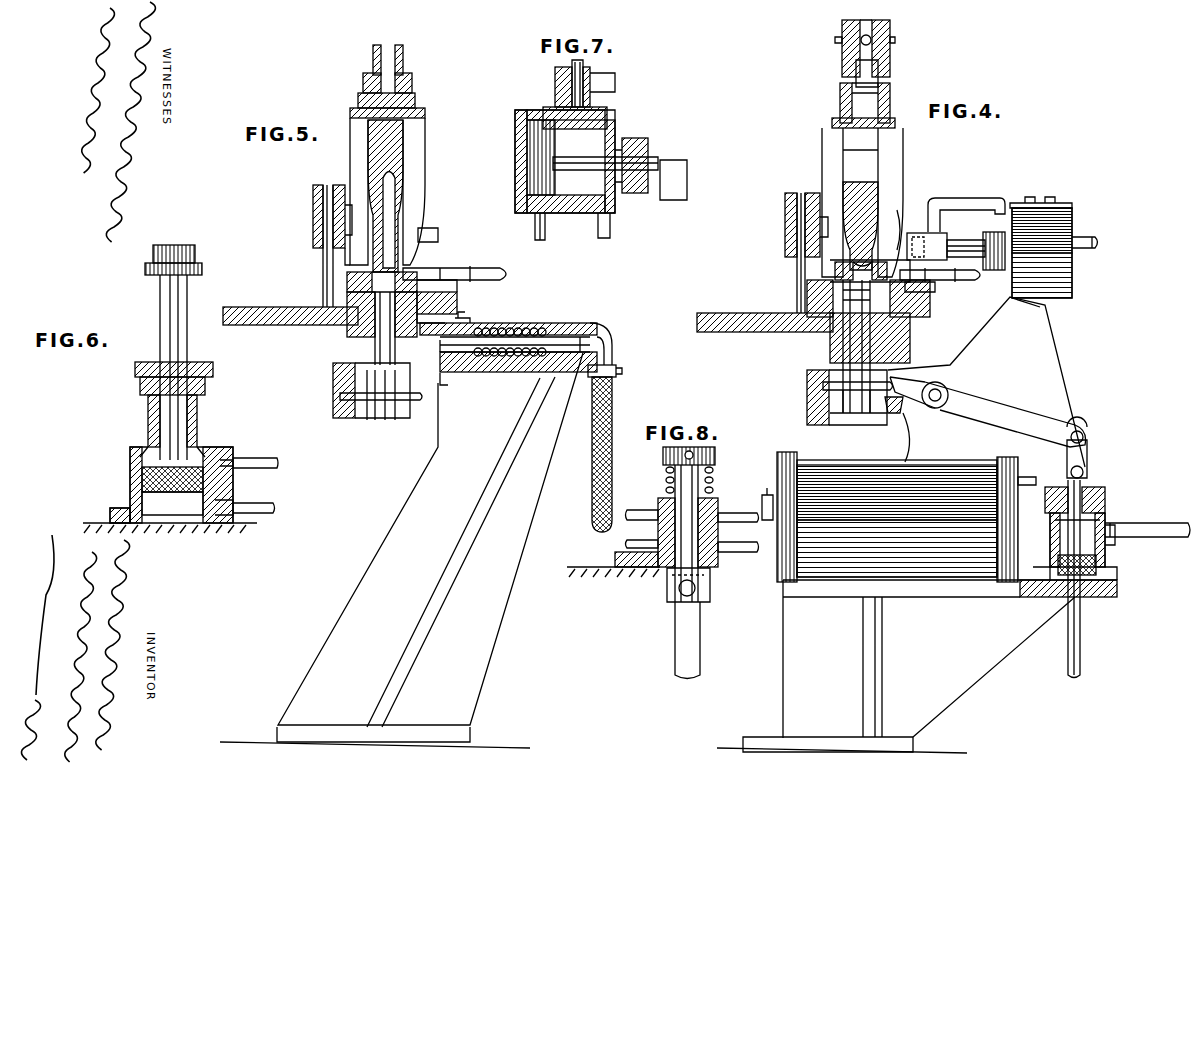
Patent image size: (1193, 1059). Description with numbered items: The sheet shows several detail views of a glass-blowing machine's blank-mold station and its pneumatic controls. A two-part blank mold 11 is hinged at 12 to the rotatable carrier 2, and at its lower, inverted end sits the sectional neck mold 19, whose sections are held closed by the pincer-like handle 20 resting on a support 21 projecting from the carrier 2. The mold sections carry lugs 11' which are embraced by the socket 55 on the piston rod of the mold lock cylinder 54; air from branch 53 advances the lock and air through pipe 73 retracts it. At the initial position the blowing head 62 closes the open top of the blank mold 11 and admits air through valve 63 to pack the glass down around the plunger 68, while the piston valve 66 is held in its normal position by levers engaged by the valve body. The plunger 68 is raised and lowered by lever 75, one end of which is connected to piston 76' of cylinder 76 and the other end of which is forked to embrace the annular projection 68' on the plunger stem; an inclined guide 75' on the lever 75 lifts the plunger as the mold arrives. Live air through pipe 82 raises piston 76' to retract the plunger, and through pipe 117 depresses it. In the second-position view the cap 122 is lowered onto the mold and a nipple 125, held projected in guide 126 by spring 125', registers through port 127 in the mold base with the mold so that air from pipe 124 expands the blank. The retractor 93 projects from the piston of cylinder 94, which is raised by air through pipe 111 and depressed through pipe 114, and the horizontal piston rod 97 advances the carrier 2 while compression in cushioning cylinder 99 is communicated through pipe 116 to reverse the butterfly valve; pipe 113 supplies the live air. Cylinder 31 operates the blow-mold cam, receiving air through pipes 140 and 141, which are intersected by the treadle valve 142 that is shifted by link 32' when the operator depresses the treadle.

In FIG. 5, the blank mold carrier 2 is at (268, 308).
In FIG. 4, the blank mold carrier 2 is at (755, 332).
In FIG. 5, the blank mold 11 is at (404, 195).
In FIG. 4, the blank mold 11 is at (877, 202).
In FIG. 5, the lugs 11' is at (440, 225).
In FIG. 4, the lugs 11' is at (913, 218).
In FIG. 5, the hinge 12 is at (320, 262).
In FIG. 4, the hinge 12 is at (800, 192).
In FIG. 5, the neck mold 19 is at (405, 260).
In FIG. 4, the neck mold 19 is at (843, 263).
In FIG. 5, the pincer-like handle 20 is at (470, 270).
In FIG. 4, the pincer-like handle 20 is at (962, 280).
In FIG. 4, the support 21 is at (930, 295).
In FIG. 7, the cylinder 31 is at (618, 113).
In FIG. 8, the link 32' is at (700, 572).
In FIG. 4, the branch pipe 53 is at (1097, 243).
In FIG. 4, the mold lock cylinder 54 is at (1050, 230).
In FIG. 4, the socket 55 is at (946, 238).
In FIG. 4, the blowing head 62 is at (838, 100).
In FIG. 4, the valve 63 is at (892, 30).
In FIG. 4, the piston valve 66 is at (830, 273).
In FIG. 5, the plunger 68 is at (361, 370).
In FIG. 4, the annular projection 68' is at (829, 397).
In FIG. 4, the pipe 73 is at (1000, 212).
In FIG. 4, the lever 75 is at (988, 427).
In FIG. 4, the inclined guide 75' is at (890, 424).
In FIG. 4, the cylinder 76 is at (1098, 531).
In FIG. 4, the piston 76' is at (1067, 600).
In FIG. 4, the pipe 82 is at (1082, 640).
In FIG. 6, the retractor 93 is at (188, 292).
In FIG. 6, the cylinder 94 is at (130, 455).
In FIG. 4, the piston rod 97 is at (768, 490).
In FIG. 4, the cushioning cylinder 99 is at (843, 463).
In FIG. 6, the pipe 111 is at (258, 502).
In FIG. 8, the pipe 113 is at (742, 553).
In FIG. 6, the pipe 114 is at (268, 447).
In FIG. 4, the pipe 116 is at (1030, 477).
In FIG. 4, the pipe 117 is at (1158, 522).
In FIG. 5, the cap 122 is at (426, 102).
In FIG. 5, the pipe 124 is at (615, 395).
In FIG. 5, the nipple 125 is at (508, 337).
In FIG. 5, the spring 125' is at (519, 307).
In FIG. 5, the guide 126 is at (448, 376).
In FIG. 5, the port 127 is at (458, 300).
In FIG. 7, the pipe 140 is at (612, 230).
In FIG. 8, the pipe 140 is at (627, 543).
In FIG. 7, the pipe 141 is at (545, 235).
In FIG. 8, the pipe 141 is at (638, 509).
In FIG. 8, the treadle valve 142 is at (716, 455).